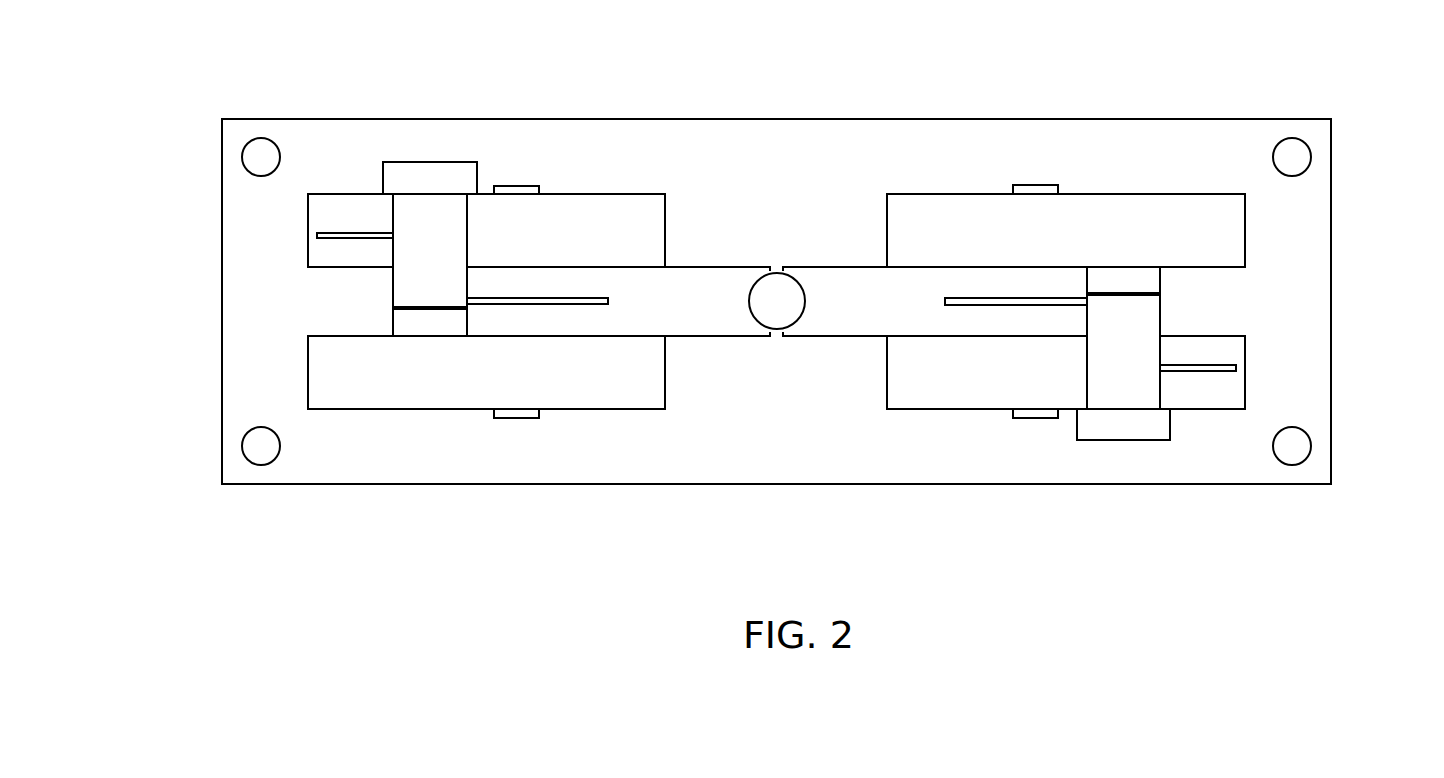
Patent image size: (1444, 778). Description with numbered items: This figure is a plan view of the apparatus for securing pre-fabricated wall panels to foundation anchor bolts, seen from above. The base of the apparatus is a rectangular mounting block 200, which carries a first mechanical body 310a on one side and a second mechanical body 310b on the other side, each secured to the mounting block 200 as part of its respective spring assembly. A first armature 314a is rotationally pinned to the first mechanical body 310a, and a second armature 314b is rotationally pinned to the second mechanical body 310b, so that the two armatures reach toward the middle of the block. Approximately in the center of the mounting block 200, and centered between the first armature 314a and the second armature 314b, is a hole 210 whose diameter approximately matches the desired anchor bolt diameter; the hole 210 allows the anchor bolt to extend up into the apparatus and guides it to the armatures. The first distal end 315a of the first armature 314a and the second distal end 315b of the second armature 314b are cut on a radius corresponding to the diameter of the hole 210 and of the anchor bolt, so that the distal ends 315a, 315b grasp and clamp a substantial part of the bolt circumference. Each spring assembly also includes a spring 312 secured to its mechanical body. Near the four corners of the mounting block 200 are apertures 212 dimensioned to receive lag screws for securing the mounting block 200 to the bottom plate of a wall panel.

The mounting block 200 is at (983, 450).
The hole 210 is at (767, 292).
The apertures 212 is at (262, 157).
The first mechanical body 310a is at (1212, 390).
The second mechanical body 310b is at (343, 374).
The slider 312 is at (407, 290).
The first armature 314a is at (998, 288).
The second armature 314b is at (531, 287).
The first distal end 315a is at (871, 279).
The second distal end 315b is at (702, 278).